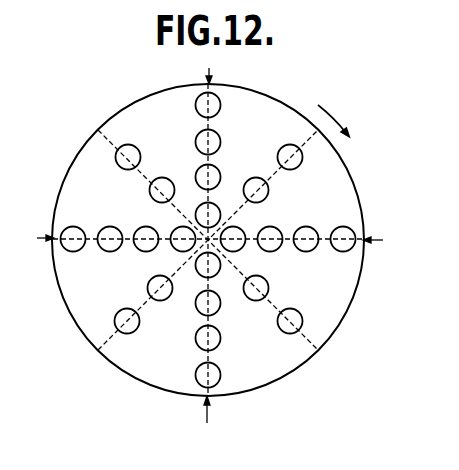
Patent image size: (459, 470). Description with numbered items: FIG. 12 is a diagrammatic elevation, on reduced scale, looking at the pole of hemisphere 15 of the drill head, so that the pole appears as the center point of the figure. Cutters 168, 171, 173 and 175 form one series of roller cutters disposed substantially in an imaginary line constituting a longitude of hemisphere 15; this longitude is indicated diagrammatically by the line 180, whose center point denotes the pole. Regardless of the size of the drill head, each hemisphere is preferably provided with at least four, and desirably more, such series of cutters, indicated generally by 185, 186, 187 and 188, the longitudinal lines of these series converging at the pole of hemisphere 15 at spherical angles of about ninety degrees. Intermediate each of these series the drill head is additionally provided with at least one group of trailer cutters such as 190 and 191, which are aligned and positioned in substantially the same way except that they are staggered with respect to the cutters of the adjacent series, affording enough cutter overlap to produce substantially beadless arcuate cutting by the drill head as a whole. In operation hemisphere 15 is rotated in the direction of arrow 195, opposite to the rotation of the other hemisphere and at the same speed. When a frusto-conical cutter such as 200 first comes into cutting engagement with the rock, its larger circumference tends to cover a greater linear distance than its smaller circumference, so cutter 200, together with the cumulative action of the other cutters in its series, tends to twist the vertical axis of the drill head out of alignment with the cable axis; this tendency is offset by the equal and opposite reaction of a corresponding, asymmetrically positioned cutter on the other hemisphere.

The hemisphere 15 is at (129, 388).
The cutter 168 is at (220, 104).
The cutter 171 is at (221, 142).
The cutter 173 is at (221, 177).
The cutter 175 is at (220, 215).
The longitude line 180 is at (206, 122).
The series of cutters 185 is at (216, 65).
The series of cutters 186 is at (31, 238).
The series of cutters 187 is at (209, 420).
The series of cutters 188 is at (390, 244).
The trailer cutter 190 is at (149, 193).
The trailer cutter 191 is at (123, 167).
The arrow 195 is at (336, 115).
The cutter 200 is at (80, 250).